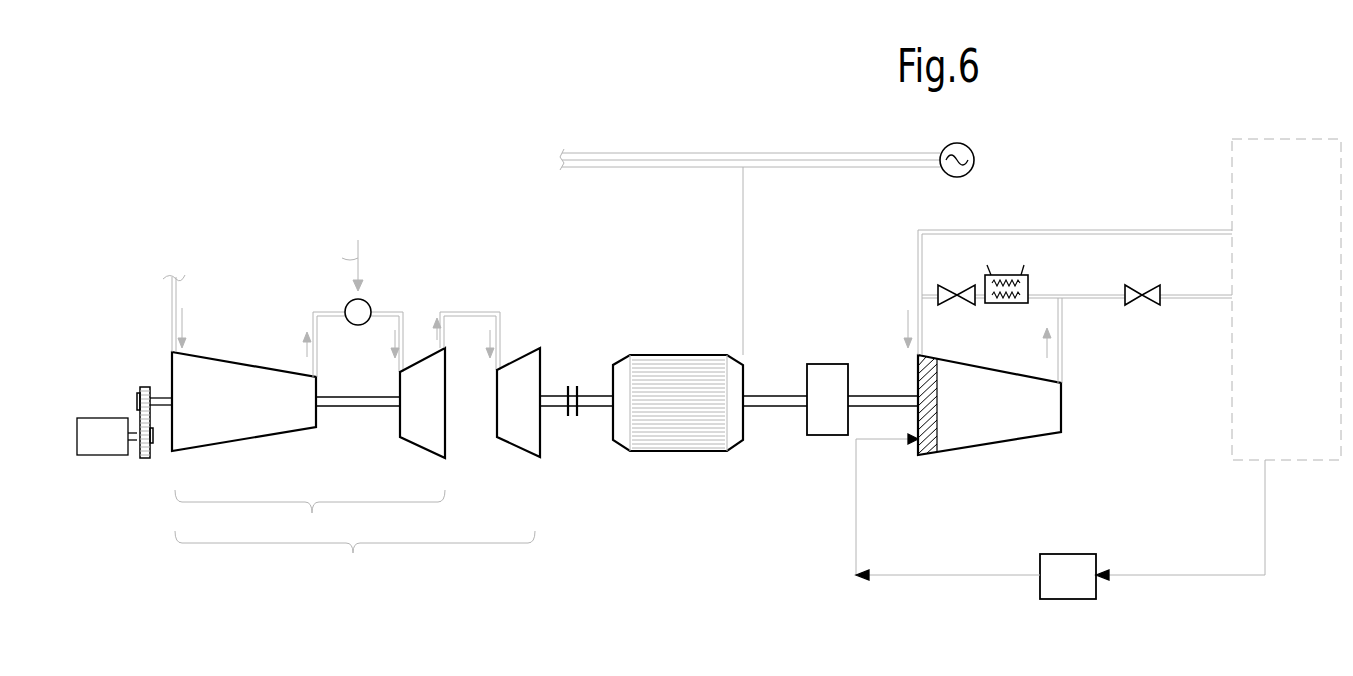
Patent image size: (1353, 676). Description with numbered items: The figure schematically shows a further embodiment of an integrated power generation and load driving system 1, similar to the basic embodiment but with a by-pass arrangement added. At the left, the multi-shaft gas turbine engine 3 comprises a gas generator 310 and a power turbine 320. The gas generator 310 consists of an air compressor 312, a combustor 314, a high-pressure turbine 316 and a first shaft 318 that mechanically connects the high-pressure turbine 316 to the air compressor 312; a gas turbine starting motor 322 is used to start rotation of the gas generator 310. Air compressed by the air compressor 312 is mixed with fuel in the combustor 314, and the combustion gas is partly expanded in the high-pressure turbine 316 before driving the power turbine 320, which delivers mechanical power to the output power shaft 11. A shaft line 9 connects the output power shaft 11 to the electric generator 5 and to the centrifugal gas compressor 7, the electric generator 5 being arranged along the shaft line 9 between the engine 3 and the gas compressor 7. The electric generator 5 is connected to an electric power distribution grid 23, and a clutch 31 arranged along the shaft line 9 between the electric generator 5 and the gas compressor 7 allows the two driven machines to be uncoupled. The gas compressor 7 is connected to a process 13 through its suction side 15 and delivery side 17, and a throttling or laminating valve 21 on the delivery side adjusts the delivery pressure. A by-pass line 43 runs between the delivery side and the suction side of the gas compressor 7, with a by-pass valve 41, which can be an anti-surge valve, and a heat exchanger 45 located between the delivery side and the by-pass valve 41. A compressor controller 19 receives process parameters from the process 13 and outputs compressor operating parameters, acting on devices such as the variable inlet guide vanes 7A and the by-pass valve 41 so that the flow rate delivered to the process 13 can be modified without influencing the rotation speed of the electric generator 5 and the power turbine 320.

The integrated power generation and load driving system 1 is at (700, 543).
The multi-shaft gas turbine engine 3 is at (355, 556).
The electric generator 5 is at (665, 345).
The centrifugal gas compressor 7 is at (993, 410).
The variable inlet guide vanes 7A is at (925, 455).
The shaft line 9 is at (590, 407).
The output power shaft 11 is at (557, 396).
The process 13 is at (1306, 116).
The suction side 15 is at (1073, 230).
The delivery side 17 is at (1063, 350).
The compressor controller 19 is at (1063, 592).
The throttling or laminating valve 21 is at (1143, 286).
The electric power distribution grid 23 is at (655, 170).
The clutch 31 is at (823, 362).
The by-pass valve 41 is at (945, 305).
The by-pass line 43 is at (1043, 295).
The heat exchanger 45 is at (1003, 273).
The gas generator 310 is at (310, 514).
The air compressor 312 is at (221, 362).
The combustor 314 is at (360, 304).
The high-pressure turbine 316 is at (422, 428).
The first shaft 318 is at (358, 396).
The power turbine 320 is at (522, 368).
The gas turbine starting motor 322 is at (111, 403).